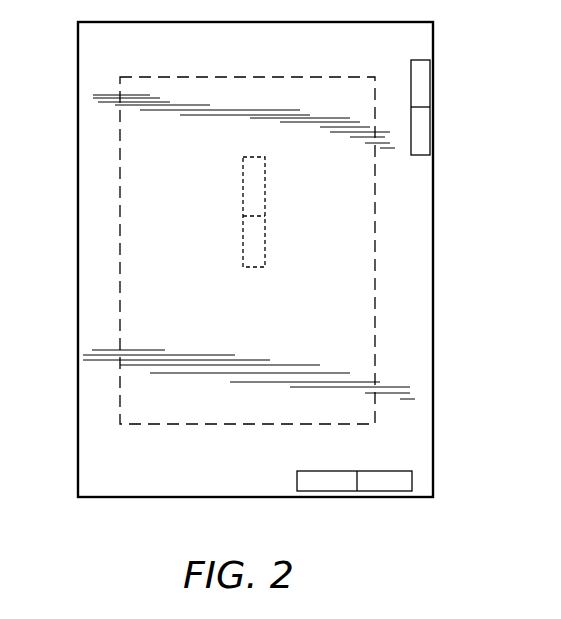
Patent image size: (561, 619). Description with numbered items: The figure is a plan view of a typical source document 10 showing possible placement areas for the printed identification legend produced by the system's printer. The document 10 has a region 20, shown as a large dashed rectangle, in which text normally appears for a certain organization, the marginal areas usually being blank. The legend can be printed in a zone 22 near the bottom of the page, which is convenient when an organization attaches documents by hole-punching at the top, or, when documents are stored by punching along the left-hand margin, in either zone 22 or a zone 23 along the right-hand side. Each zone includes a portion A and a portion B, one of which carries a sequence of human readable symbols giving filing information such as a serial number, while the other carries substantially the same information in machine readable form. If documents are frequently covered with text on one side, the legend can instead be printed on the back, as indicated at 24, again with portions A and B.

The document 10 is at (434, 288).
The region 20 is at (119, 255).
The zone 22 is at (294, 482).
The zone 23 is at (420, 156).
The legend on the back 24 is at (260, 268).